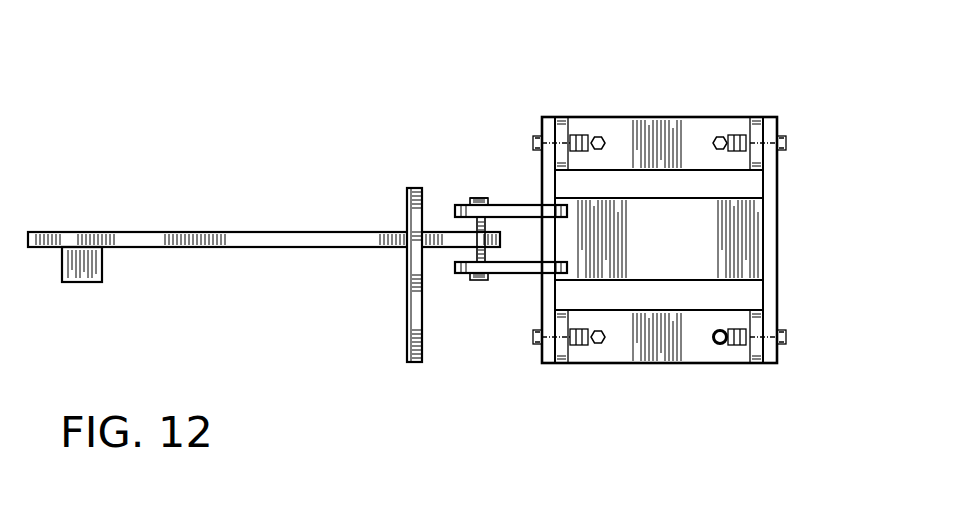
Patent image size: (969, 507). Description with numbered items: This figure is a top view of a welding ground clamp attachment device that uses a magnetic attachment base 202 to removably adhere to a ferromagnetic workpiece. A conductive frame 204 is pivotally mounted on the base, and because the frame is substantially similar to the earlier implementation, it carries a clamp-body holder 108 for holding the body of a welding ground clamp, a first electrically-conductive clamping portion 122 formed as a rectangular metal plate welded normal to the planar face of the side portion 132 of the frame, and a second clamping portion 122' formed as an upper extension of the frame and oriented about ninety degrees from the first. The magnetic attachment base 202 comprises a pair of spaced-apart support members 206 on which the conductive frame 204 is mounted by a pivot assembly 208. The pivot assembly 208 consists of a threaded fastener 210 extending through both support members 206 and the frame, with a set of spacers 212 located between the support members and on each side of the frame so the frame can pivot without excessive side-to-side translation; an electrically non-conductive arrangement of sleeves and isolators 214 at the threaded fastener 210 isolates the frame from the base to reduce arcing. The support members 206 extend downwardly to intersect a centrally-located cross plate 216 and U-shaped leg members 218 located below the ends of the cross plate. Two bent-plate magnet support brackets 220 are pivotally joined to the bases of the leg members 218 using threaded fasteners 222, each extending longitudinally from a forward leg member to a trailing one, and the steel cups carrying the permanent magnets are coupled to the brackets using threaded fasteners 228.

The clamp-body holder 108 is at (412, 223).
The first electrically-conductive clamping portion 122 is at (178, 301).
The second clamping portion 122' is at (102, 208).
The side portion 132 is at (193, 247).
The magnetic attachment base 202 is at (615, 221).
The conductive frame 204 is at (268, 228).
The support members 206 is at (483, 212).
The pivot assembly 208 is at (465, 193).
The threaded fastener 210 is at (486, 280).
The spacers 212 is at (490, 255).
The sleeves and isolators 214 is at (477, 195).
The cross plate 216 is at (735, 243).
The U-shaped leg members 218 is at (540, 355).
The magnet support brackets 220 is at (590, 122).
The threaded fasteners 222 is at (786, 134).
The threaded fasteners 228 is at (719, 134).